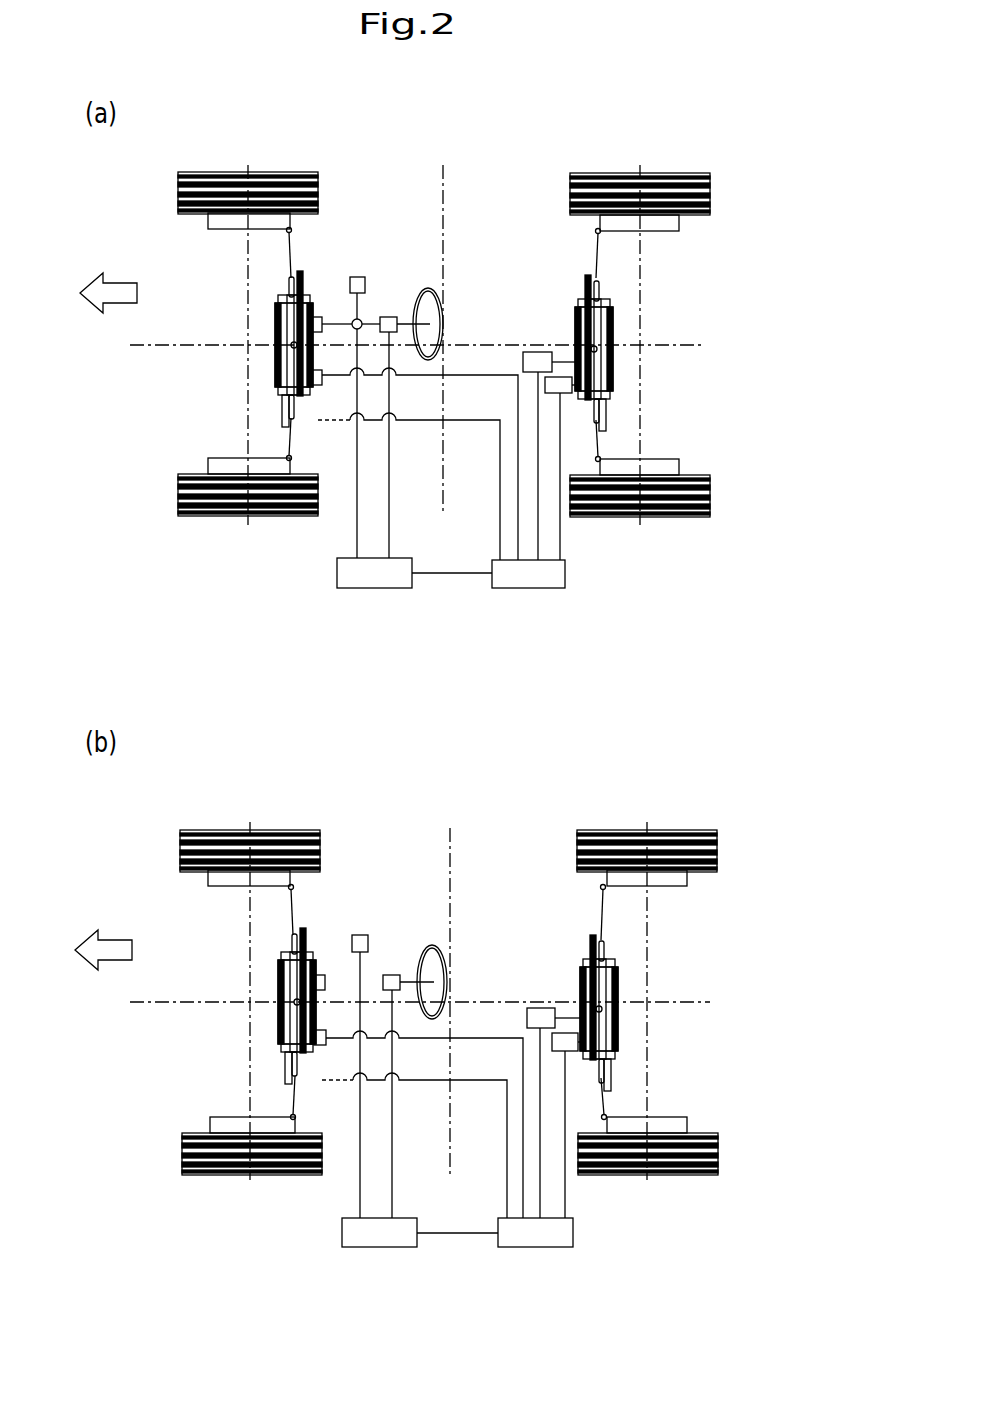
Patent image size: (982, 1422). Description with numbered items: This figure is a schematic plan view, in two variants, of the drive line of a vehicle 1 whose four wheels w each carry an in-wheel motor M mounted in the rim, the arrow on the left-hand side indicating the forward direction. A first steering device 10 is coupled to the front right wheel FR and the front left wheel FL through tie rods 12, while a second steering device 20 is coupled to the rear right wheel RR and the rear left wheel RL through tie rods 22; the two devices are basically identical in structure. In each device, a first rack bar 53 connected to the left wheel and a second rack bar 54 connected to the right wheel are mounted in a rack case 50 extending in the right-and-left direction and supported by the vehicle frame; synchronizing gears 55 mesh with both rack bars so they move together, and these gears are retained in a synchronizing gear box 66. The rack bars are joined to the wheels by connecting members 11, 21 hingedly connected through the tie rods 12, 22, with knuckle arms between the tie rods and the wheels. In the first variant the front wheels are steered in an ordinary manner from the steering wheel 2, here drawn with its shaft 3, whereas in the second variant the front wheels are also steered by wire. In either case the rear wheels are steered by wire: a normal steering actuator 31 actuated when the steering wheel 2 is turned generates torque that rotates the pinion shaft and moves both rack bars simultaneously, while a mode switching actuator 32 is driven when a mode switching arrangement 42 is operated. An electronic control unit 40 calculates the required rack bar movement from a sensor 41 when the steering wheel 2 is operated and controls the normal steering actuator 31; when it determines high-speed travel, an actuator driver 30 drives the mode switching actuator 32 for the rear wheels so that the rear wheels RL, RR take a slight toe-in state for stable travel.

The vehicle 1 is at (435, 147).
The steering wheel 2 is at (432, 320).
The steering shaft 3 is at (438, 290).
The first steering device 10 is at (272, 344).
The connecting member 11 is at (289, 290).
The tie rod 12 is at (288, 250).
The second steering device 20 is at (618, 352).
The connecting member 21 is at (605, 305).
The tie rod 22 is at (598, 250).
The actuator driver 30 is at (528, 578).
The normal steering actuator 31 is at (316, 317).
The mode switching actuator 32 is at (320, 388).
The electronic control unit (ECU) 40 is at (392, 596).
The sensor 41 is at (390, 317).
The mode switching arrangement 42 is at (356, 277).
The rack case 50 is at (275, 347).
The first rack bar 53 is at (287, 396).
The second rack bar 54 is at (285, 305).
The synchronizing gear 55 is at (275, 352).
The synchronizing gear box 66 is at (285, 375).
The wheel W is at (265, 160).
The in-wheel motor M is at (232, 222).
The front right wheel FR is at (222, 183).
The front left wheel FL is at (215, 495).
The rear right wheel RR is at (605, 185).
The rear left wheel RL is at (680, 500).